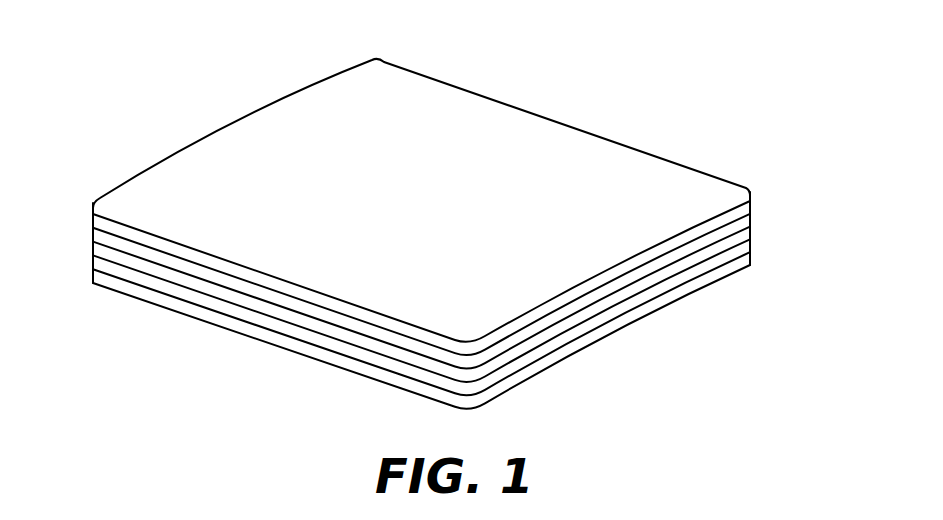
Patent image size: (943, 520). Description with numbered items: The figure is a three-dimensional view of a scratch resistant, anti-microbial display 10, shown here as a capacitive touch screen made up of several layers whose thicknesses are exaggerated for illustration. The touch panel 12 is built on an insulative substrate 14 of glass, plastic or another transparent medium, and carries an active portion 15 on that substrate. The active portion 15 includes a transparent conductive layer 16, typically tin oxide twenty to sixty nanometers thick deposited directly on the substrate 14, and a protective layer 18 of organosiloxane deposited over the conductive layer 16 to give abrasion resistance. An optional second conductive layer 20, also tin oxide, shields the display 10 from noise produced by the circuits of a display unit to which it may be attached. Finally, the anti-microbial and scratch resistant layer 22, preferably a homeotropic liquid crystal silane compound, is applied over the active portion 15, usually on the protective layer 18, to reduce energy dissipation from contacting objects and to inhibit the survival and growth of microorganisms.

The scratch resistant, anti-microbial display 10 is at (452, 209).
The touch panel 12 is at (452, 289).
The insulative substrate 14 is at (752, 246).
The active portion 15 is at (482, 276).
The transparent conductive layer 16 is at (456, 295).
The protective layer 18 is at (752, 220).
The second conductive layer 20 is at (752, 262).
The anti-microbial and scratch resistant layer 22 is at (547, 138).